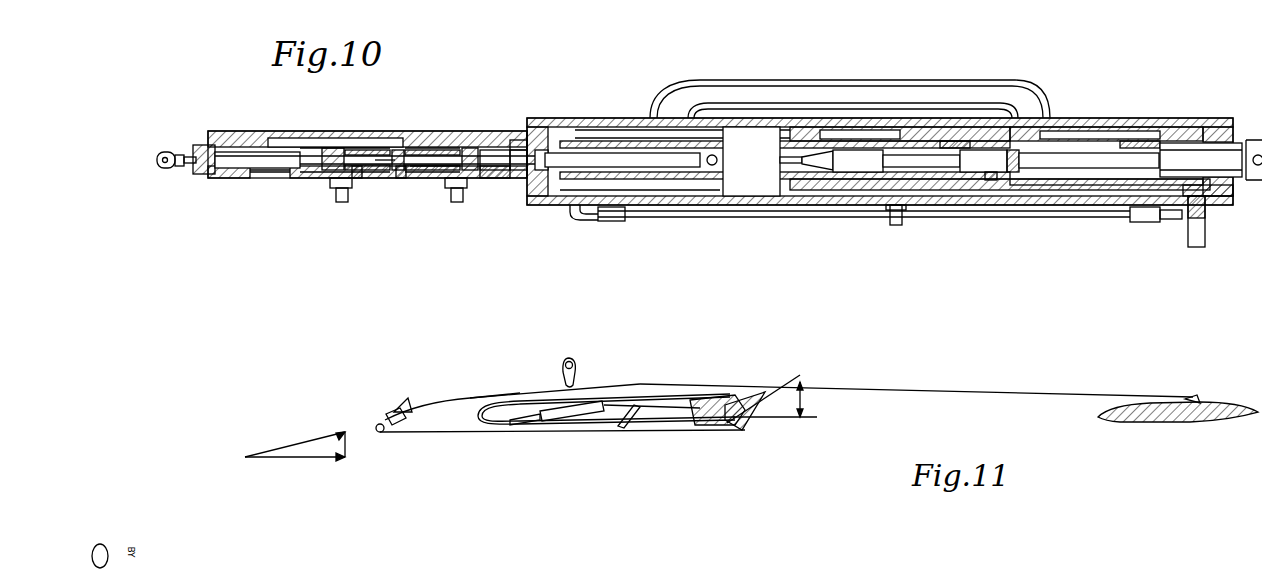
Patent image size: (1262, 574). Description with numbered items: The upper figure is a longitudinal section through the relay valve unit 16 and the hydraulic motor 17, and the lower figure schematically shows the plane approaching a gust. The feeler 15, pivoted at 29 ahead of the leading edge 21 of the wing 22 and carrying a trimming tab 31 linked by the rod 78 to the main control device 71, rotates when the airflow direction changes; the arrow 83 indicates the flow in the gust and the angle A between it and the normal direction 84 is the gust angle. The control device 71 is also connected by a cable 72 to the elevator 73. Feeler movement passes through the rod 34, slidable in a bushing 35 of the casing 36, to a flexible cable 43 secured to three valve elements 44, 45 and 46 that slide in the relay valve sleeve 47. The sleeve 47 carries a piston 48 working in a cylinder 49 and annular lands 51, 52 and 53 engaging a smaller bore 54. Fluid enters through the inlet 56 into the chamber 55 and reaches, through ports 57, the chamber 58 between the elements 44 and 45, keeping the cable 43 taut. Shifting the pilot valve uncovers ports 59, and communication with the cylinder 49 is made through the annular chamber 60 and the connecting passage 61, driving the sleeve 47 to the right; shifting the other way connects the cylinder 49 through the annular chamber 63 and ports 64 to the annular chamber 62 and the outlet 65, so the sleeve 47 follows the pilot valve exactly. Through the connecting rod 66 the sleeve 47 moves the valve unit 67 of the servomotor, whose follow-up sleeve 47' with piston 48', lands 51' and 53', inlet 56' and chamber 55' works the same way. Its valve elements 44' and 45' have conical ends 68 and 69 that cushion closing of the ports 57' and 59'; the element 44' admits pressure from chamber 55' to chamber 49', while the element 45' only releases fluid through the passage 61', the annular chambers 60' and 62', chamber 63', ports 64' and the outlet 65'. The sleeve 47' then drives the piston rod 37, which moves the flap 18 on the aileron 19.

In FIG. 10, the control transmitting rod 34 is at (172, 170).
In FIG. 11, the control transmitting rod 34 is at (415, 431).
In FIG. 10, the bushing 35 is at (200, 176).
In FIG. 10, the casing 36 is at (232, 132).
In FIG. 10, the piston rod 37 is at (1207, 152).
In FIG. 10, the cable 43 is at (283, 167).
In FIG. 10, the valve element 44 is at (402, 198).
In FIG. 10, the valve element 45 is at (375, 200).
In FIG. 10, the valve element 46 is at (490, 172).
In FIG. 10, the relay valve sleeve 47 is at (520, 195).
In FIG. 10, the piston 48 is at (339, 133).
In FIG. 10, the cylinder 49 is at (239, 205).
In FIG. 10, the annular land 51 is at (367, 132).
In FIG. 10, the annular land 52 is at (422, 150).
In FIG. 10, the annular land 53 is at (496, 132).
In FIG. 10, the bore 54 is at (519, 142).
In FIG. 10, the chamber 55 is at (333, 132).
In FIG. 10, the inlet 56 is at (312, 209).
In FIG. 10, the ports 57 is at (324, 210).
In FIG. 10, the chamber 58 is at (360, 176).
In FIG. 10, the ports 59 is at (393, 203).
In FIG. 10, the annular chamber 60 is at (389, 132).
In FIG. 10, the connecting passage 61 is at (333, 120).
In FIG. 10, the annular chamber 62 is at (473, 132).
In FIG. 10, the annular chamber 63 is at (432, 133).
In FIG. 10, the ports 64 is at (434, 203).
In FIG. 10, the outlet 65 is at (452, 209).
In FIG. 10, the connecting rod 66 is at (752, 170).
In FIG. 10, the slidable valve unit 67 is at (925, 170).
In FIG. 10, the conical end 68 is at (845, 170).
In FIG. 10, the conical end 69 is at (1015, 172).
In FIG. 10, the piston 48' is at (999, 119).
In FIG. 10, the chamber 49' is at (880, 197).
In FIG. 10, the annular land 51' is at (934, 98).
In FIG. 10, the annular land 53' is at (1140, 98).
In FIG. 10, the chamber 55' is at (860, 93).
In FIG. 10, the inlet 56' is at (901, 240).
In FIG. 10, the ports 57' is at (826, 213).
In FIG. 10, the ports 59' is at (1001, 224).
In FIG. 10, the annular chamber 60' is at (1100, 93).
In FIG. 10, the passage 61' is at (812, 93).
In FIG. 10, the annular chamber 62' is at (1199, 122).
In FIG. 10, the chamber 63' is at (1089, 108).
In FIG. 10, the ports 64' is at (876, 231).
In FIG. 10, the outlet 65' is at (1181, 230).
In FIG. 10, the valve element 44' is at (858, 213).
In FIG. 10, the valve element 45' is at (983, 213).
In FIG. 10, the follow-up sleeve 47' is at (1106, 227).
In FIG. 11, the feeler 15 is at (390, 412).
In FIG. 11, the valve unit 16 is at (515, 424).
In FIG. 11, the hydraulic motor 17 is at (556, 418).
In FIG. 11, the flap 18 is at (738, 405).
In FIG. 11, the aileron 19 is at (712, 403).
In FIG. 11, the leading edge 21 is at (472, 410).
In FIG. 11, the wing 22 is at (612, 430).
In FIG. 11, the pivot 29 is at (377, 425).
In FIG. 11, the trimming tab 31 is at (406, 400).
In FIG. 11, the main control device 71 is at (562, 372).
In FIG. 11, the cable 72 is at (620, 386).
In FIG. 11, the elevator 73 is at (1230, 409).
In FIG. 11, the rod 78 is at (497, 395).
In FIG. 11, the arrow 83 is at (305, 432).
In FIG. 11, the normal direction 84 is at (312, 462).